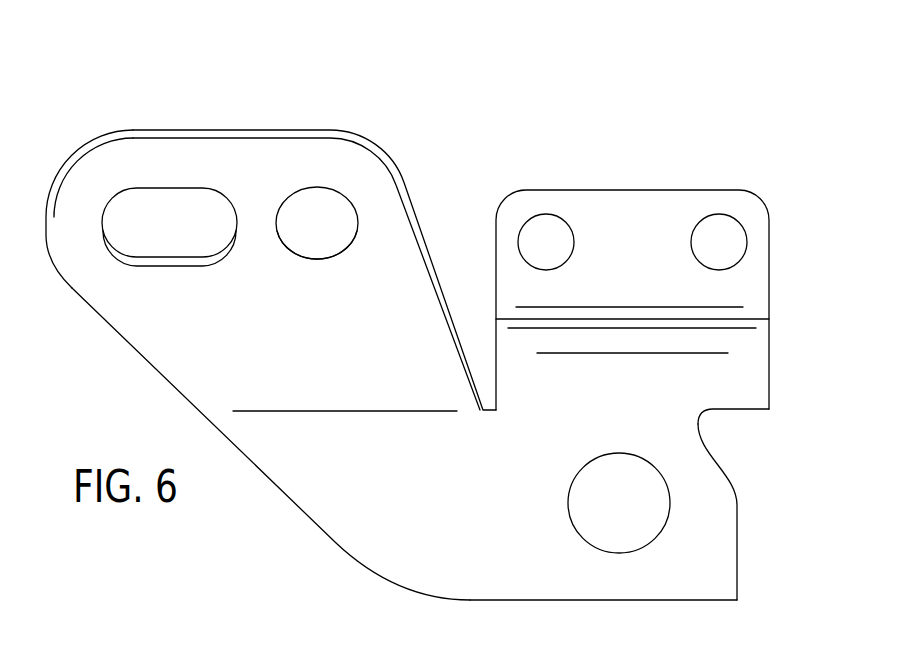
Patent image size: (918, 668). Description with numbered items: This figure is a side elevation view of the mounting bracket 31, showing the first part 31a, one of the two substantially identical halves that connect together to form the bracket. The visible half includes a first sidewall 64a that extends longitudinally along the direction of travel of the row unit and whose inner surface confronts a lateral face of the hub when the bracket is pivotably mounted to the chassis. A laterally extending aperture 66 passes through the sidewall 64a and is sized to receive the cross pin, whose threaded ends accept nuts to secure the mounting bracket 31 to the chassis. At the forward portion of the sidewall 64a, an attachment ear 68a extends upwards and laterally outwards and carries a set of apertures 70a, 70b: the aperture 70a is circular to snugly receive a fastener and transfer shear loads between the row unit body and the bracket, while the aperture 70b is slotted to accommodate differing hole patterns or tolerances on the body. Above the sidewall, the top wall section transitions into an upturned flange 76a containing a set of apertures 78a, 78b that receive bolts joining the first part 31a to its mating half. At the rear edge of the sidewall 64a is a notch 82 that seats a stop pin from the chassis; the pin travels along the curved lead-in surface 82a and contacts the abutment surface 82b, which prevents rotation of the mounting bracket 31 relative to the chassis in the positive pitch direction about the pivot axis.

The mounting bracket 31 is at (432, 342).
The first part 31a is at (343, 530).
The first sidewall 64a is at (527, 577).
The laterally extending aperture 66 is at (657, 538).
The attachment ear 68a is at (125, 325).
The circular aperture 70a is at (347, 193).
The slotted aperture 70b is at (172, 188).
The upturned flange 76a is at (627, 203).
The flange aperture 78a is at (740, 222).
The flange aperture 78b is at (525, 222).
The notch 82 is at (739, 476).
The lead-in surface 82a is at (730, 477).
The abutment surface 82b is at (698, 422).